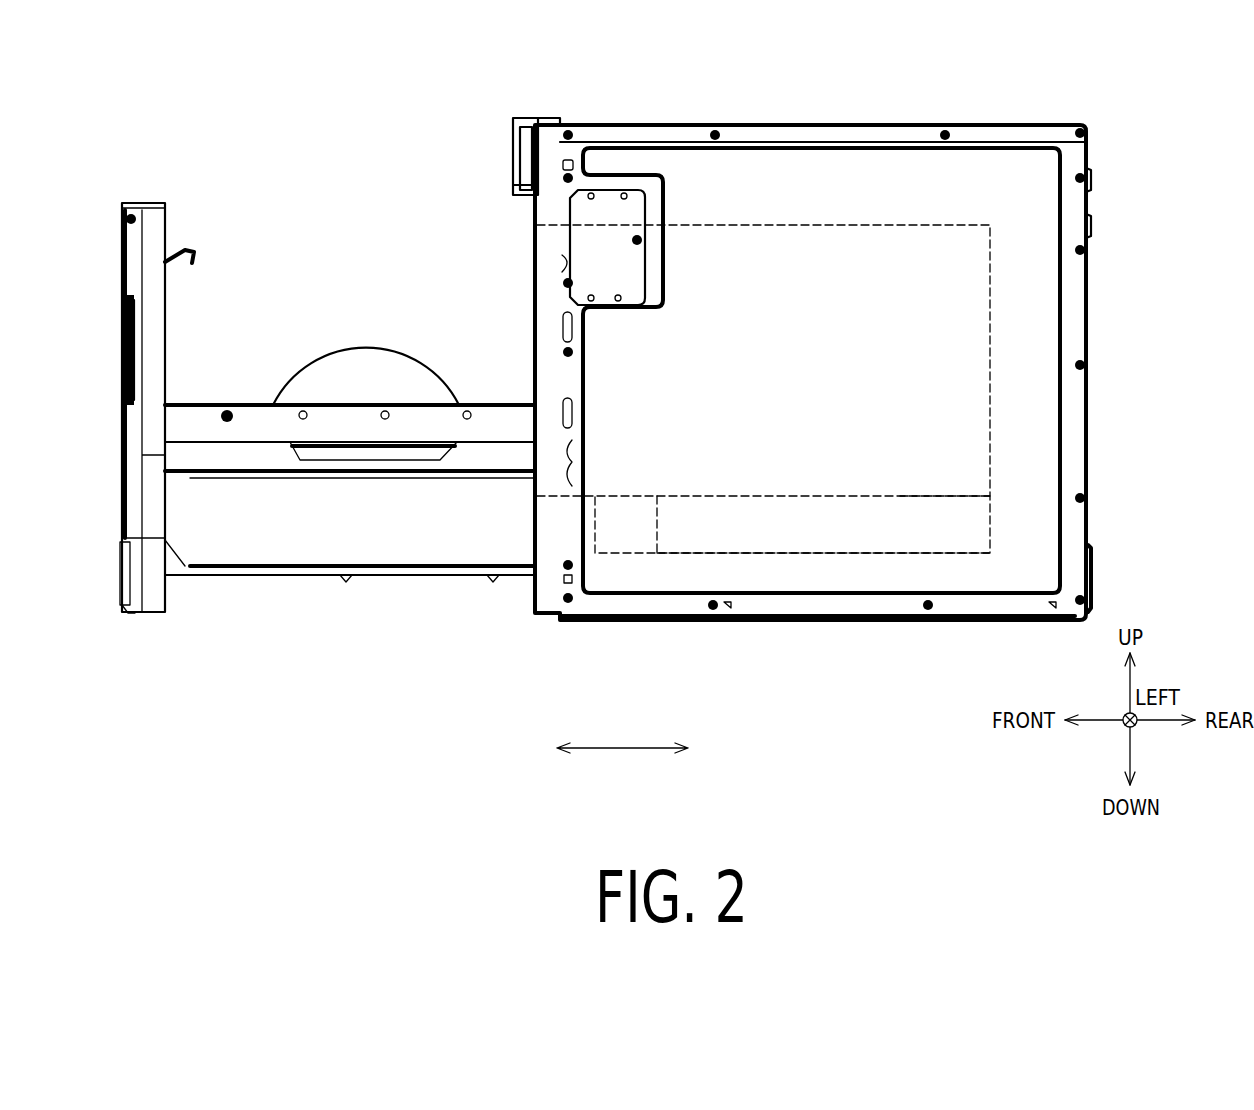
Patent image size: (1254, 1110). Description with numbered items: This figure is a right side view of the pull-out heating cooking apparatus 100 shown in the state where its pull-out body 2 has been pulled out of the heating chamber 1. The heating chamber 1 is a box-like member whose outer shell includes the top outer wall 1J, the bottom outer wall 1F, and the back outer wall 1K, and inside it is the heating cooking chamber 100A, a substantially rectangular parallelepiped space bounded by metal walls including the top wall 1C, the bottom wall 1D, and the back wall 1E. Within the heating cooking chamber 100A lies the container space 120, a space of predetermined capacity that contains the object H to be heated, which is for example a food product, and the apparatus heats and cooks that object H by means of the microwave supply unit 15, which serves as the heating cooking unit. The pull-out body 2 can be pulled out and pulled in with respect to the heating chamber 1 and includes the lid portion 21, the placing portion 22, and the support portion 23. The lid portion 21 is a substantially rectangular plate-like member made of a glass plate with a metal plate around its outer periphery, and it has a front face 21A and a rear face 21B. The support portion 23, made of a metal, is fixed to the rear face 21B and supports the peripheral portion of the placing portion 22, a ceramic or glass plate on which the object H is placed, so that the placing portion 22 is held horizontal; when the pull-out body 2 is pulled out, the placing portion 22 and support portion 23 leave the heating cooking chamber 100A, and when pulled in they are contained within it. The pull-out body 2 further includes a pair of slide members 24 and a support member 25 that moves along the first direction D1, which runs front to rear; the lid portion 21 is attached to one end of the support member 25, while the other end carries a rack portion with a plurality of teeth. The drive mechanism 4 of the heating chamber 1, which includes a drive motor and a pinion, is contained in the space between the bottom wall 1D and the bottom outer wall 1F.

The pull-out heating cooking apparatus 100 is at (1083, 58).
The heating chamber 1 is at (1065, 120).
The heating cooking chamber 100A is at (993, 290).
The top wall 1C is at (770, 225).
The top outer wall 1J is at (855, 125).
The back outer wall 1K is at (1085, 365).
The back wall 1E is at (990, 438).
The bottom wall 1D is at (752, 495).
The bottom outer wall 1F is at (828, 623).
The drive mechanism 4 is at (625, 552).
The container space 120 is at (882, 455).
The microwave supply unit 15 is at (963, 552).
The pull-out body 2 is at (412, 697).
The lid portion 21 is at (155, 622).
The front face 21A is at (118, 234).
The rear face 21B is at (172, 232).
The placing portion 22 is at (275, 478).
The support portion 23 is at (237, 460).
The slide members 24 is at (365, 428).
The support member 25 is at (412, 572).
The object to be heated H is at (365, 365).
The first direction D1 is at (620, 750).